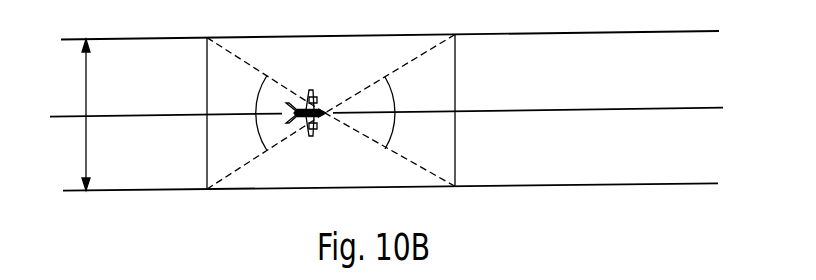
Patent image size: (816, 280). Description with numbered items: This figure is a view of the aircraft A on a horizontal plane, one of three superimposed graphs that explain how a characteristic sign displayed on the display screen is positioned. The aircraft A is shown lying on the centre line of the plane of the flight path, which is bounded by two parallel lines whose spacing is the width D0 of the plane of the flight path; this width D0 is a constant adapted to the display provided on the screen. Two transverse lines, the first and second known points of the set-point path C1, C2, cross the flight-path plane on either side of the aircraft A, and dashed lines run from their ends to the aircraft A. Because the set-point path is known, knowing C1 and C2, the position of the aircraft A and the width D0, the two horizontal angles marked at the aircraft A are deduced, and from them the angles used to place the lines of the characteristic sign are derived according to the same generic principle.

The first reference point of the set-point path C1 is at (204, 97).
The second reference point of the set-point path C2 is at (457, 96).
The width of the plane of the flight path D0 is at (70, 114).
The aircraft A is at (318, 98).